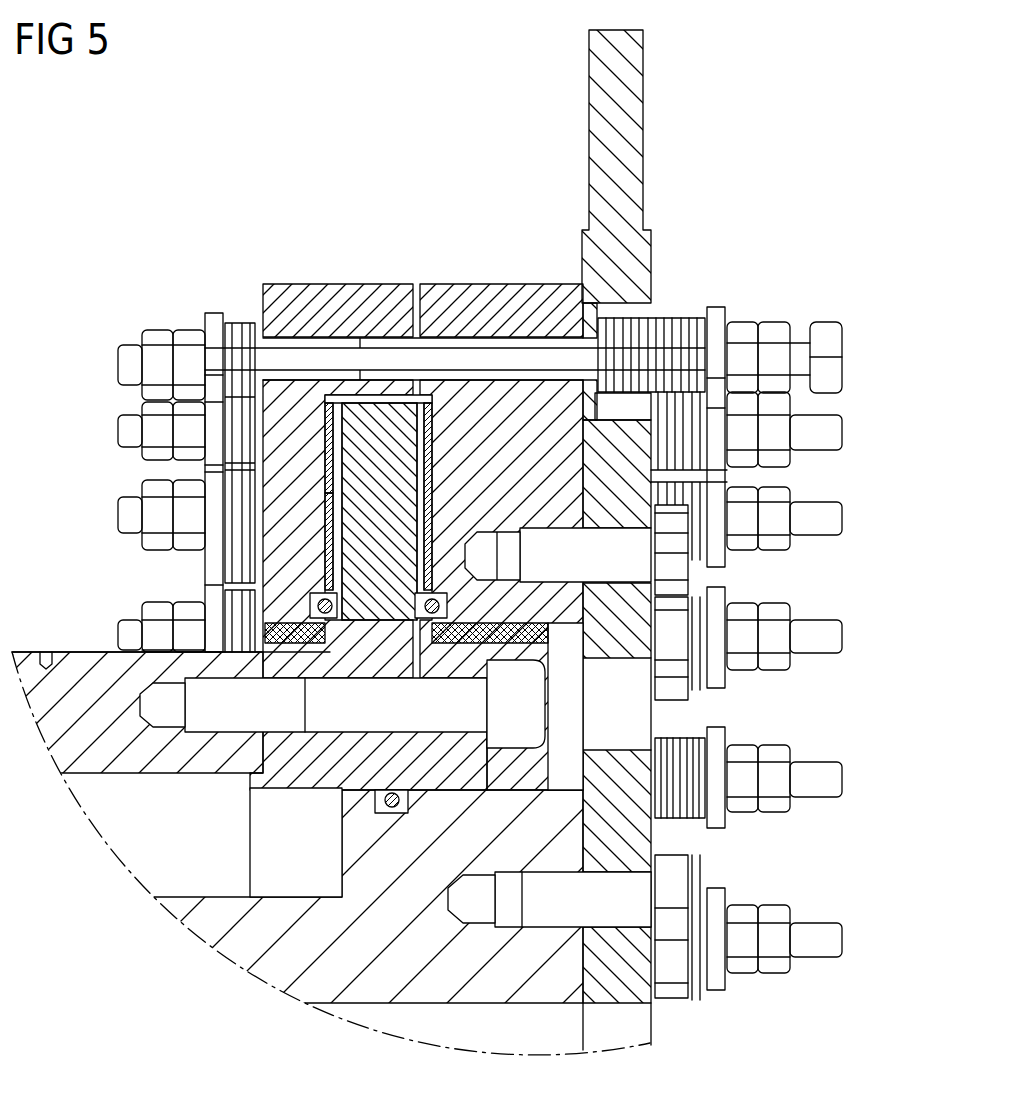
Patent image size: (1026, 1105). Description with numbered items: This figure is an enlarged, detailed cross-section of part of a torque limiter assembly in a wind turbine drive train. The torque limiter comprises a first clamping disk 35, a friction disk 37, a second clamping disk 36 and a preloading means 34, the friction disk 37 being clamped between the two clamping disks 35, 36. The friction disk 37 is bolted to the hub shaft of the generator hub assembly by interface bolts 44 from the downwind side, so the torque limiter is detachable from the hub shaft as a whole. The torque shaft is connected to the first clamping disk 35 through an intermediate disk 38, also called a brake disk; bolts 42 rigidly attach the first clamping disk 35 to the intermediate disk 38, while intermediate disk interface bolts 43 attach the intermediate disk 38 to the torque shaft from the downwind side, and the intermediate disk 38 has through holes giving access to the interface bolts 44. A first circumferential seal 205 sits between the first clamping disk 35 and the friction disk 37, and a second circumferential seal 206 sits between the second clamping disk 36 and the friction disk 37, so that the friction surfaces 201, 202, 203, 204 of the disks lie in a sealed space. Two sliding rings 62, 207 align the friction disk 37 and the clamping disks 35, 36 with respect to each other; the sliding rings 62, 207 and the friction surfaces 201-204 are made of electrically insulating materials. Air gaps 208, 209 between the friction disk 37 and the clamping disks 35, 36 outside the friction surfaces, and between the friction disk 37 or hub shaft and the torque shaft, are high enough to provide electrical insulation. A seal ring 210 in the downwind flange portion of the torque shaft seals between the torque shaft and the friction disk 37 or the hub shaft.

The preloading means 34 is at (866, 335).
The first clamping disk 35 is at (513, 296).
The second clamping disk 36 is at (284, 300).
The friction disk 37 is at (397, 417).
The intermediate disk 38 is at (628, 81).
The bolts 42 is at (627, 557).
The intermediate disk interface bolts 43 is at (676, 870).
The interface bolts 44 is at (528, 715).
The sliding ring 62 is at (549, 635).
The friction surface 201 is at (431, 482).
The friction surface 202 is at (421, 438).
The friction surface 203 is at (338, 481).
The friction surface 204 is at (328, 563).
The first circumferential seal 205 is at (427, 610).
The second circumferential seal 206 is at (318, 605).
The sliding ring 207 is at (300, 643).
The air gap 208 is at (358, 376).
The air gap 209 is at (375, 798).
The seal ring 210 is at (391, 812).